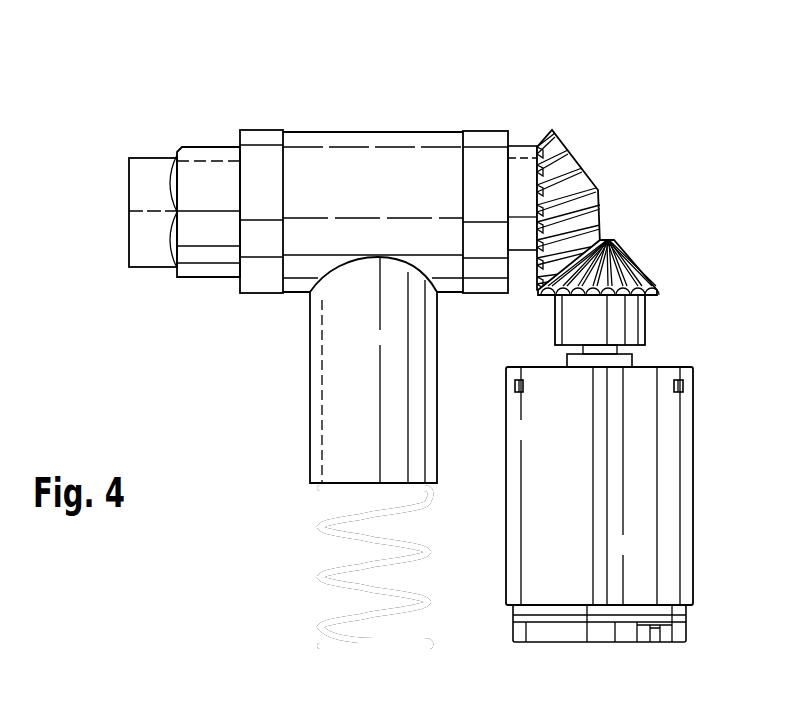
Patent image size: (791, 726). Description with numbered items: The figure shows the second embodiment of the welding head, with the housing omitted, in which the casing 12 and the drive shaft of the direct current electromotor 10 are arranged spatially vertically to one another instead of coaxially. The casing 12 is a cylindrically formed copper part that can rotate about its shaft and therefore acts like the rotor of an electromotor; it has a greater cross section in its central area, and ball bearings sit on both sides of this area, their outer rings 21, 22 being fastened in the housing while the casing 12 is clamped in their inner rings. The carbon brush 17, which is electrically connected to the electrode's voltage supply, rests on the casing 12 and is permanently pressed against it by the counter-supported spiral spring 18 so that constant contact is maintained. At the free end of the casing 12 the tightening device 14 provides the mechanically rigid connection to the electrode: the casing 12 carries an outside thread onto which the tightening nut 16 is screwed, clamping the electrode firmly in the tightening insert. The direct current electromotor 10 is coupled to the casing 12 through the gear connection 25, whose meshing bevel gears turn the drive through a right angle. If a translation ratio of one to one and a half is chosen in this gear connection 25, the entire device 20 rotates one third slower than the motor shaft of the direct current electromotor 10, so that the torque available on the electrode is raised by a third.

The direct current electromotor 10 is at (667, 498).
The casing 12 is at (375, 177).
The tightening device 14 is at (240, 112).
The tightening nut 16 is at (202, 230).
The carbon brush 17 is at (342, 382).
The spiral spring 18 is at (368, 565).
The entire device 20 is at (692, 63).
The outer ring 21 is at (263, 170).
The outer ring 22 is at (487, 167).
The gear connection 25 is at (657, 112).